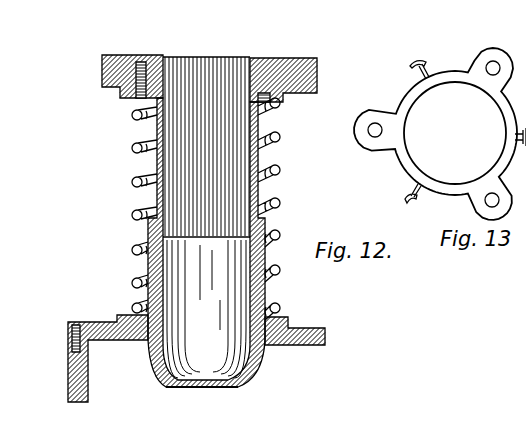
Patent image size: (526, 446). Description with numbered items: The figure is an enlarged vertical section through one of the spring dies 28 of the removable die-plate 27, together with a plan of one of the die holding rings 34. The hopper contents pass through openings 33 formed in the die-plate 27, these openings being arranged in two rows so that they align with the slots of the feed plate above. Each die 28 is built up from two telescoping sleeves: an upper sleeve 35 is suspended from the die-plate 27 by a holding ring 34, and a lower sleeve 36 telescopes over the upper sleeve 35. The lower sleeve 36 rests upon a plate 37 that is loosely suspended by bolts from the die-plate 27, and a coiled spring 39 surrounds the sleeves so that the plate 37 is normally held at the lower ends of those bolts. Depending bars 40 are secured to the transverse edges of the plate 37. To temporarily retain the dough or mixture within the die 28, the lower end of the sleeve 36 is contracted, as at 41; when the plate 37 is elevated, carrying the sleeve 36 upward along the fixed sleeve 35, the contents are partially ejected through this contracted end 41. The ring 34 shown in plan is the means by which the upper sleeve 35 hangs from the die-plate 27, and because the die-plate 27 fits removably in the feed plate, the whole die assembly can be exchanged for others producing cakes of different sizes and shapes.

In FIG. 12, the die-plate 27 is at (312, 60).
In FIG. 12, the spring dies 28 is at (280, 209).
In FIG. 12, the openings 33 is at (228, 68).
In FIG. 12, the holding rings 34 is at (123, 98).
In FIG. 13, the holding rings 34 is at (440, 134).
In FIG. 12, the sleeves 35 is at (156, 159).
In FIG. 12, the sleeves 36 is at (243, 261).
In FIG. 12, the plate 37 is at (312, 329).
In FIG. 12, the coiled springs 39 is at (284, 203).
In FIG. 12, the depending bars 40 is at (90, 387).
In FIG. 12, the contracted lower end 41 is at (191, 386).